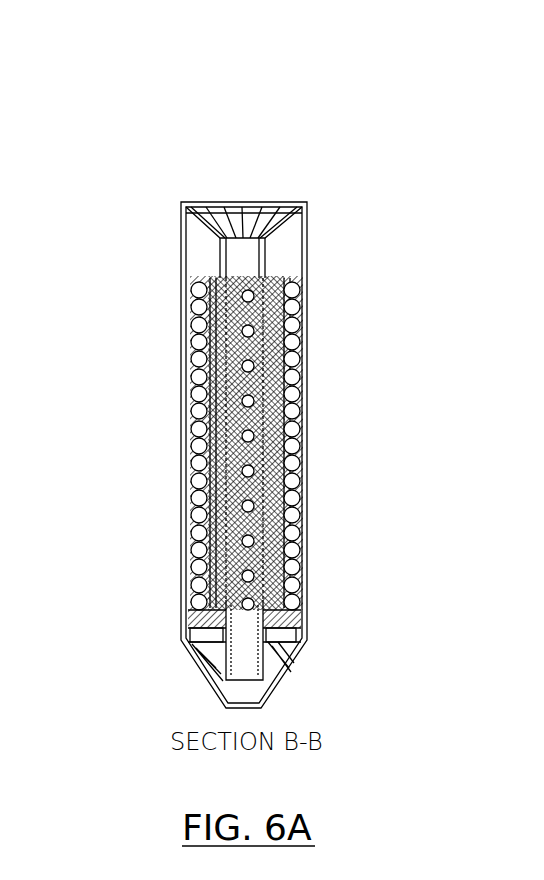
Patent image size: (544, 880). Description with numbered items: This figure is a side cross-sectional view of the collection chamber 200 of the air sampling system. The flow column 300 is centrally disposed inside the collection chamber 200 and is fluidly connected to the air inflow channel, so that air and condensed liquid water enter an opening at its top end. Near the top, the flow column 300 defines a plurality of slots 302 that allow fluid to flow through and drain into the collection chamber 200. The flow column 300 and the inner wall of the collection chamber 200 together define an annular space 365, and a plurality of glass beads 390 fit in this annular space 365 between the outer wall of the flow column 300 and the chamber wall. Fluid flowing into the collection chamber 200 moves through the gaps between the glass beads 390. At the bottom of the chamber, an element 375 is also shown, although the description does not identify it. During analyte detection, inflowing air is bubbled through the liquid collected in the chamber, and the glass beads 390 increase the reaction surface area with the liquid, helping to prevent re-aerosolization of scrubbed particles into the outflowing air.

The collection chamber 200 is at (314, 217).
The slots 302 is at (252, 204).
The flow column 300 is at (266, 251).
The glass beads 390 is at (193, 475).
The annular space 365 is at (299, 628).
The bottom bracket 375 is at (204, 658).